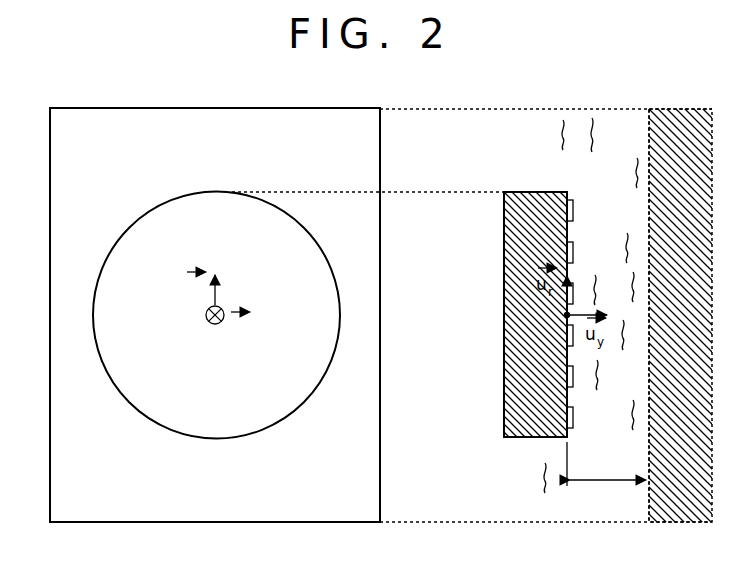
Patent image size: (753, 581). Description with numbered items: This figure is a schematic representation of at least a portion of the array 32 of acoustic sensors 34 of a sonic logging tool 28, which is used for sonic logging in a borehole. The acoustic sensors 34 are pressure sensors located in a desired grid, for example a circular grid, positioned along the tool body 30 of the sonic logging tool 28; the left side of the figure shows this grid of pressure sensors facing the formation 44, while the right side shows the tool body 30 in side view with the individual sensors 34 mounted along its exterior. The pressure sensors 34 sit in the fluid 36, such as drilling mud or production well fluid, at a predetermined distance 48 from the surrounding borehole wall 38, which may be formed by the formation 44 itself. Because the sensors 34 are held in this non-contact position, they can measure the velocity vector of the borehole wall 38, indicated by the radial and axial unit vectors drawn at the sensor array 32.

The sonic logging tool 28 is at (535, 451).
The tool body 30 is at (510, 440).
The array of acoustic sensors 32 is at (133, 414).
The acoustic sensors 34 is at (575, 293).
The fluid 36 is at (620, 160).
The borehole wall 38 is at (646, 143).
The formation 44 is at (206, 114).
The predetermined distance 48 is at (605, 480).